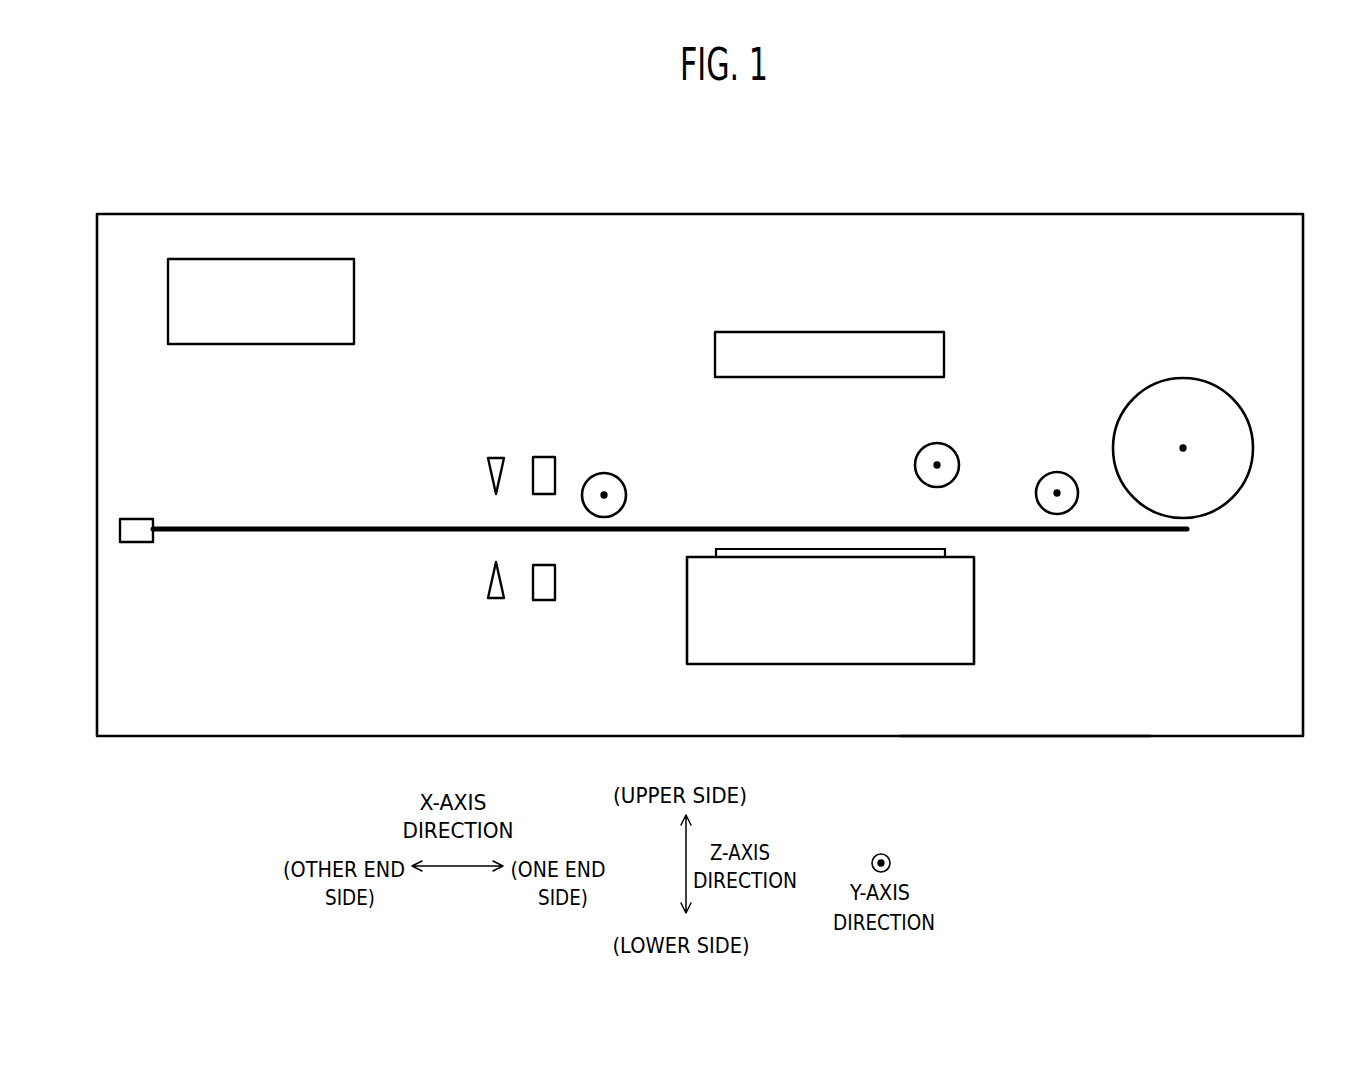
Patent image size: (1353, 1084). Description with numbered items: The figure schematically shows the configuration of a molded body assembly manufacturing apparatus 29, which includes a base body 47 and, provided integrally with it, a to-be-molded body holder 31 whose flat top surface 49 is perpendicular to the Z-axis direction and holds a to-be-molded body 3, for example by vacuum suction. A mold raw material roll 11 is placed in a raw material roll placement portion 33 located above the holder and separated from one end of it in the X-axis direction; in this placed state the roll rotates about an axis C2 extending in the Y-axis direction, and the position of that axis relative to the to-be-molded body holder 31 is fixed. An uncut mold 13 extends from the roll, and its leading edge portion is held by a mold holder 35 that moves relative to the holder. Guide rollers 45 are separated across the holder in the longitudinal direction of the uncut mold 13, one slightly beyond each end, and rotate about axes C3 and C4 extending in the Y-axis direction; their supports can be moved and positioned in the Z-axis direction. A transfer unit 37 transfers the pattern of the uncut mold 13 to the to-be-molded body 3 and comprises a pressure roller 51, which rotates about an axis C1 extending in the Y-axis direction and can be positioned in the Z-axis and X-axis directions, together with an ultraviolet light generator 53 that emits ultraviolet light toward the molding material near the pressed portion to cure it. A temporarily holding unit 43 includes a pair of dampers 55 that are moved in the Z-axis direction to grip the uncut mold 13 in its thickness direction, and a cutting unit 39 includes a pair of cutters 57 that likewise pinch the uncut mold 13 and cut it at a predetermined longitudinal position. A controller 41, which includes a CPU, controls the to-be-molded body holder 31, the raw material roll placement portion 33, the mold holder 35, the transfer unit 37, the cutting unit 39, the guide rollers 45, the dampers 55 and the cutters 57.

The molded body assembly manufacturing apparatus 29 is at (1094, 189).
The controller 41 is at (354, 296).
The mold holder 35 is at (140, 518).
The uncut mold 13 is at (795, 524).
The cutters 57 is at (488, 478).
The dampers 55 is at (555, 478).
The cutting unit 39 is at (501, 428).
The temporarily holding unit 43 is at (552, 428).
The guide rollers 45 is at (1057, 472).
The rotation axis of guide roller C4 is at (604, 495).
The ultraviolet light generator 53 is at (852, 331).
The pressure roller 51 is at (937, 443).
The rotation axis of pressure roller C1 is at (935, 467).
The transfer unit 37 is at (989, 387).
The rotation axis of guide roller C3 is at (1055, 493).
The mold raw material roll 11 is at (1185, 378).
The rotation axis of mold raw material roll C2 is at (1185, 448).
The raw material roll placement portion 33 is at (1234, 369).
The flat surface 49 is at (945, 549).
The to-be-molded body 3 is at (716, 549).
The to-be-molded body holder 31 is at (974, 615).
The base body 47 is at (1030, 737).